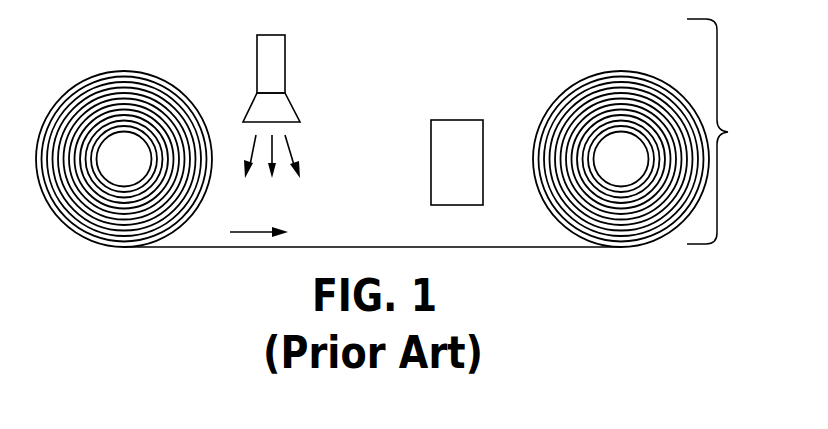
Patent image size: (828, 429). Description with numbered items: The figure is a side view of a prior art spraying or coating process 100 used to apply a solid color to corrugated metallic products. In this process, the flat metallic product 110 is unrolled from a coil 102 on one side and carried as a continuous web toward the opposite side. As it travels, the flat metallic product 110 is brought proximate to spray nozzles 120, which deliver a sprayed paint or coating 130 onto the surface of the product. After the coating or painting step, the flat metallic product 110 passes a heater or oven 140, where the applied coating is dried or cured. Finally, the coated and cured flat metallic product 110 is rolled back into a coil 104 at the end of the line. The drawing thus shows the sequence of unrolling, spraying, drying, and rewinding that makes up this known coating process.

The spraying or coating process 100 is at (732, 131).
The coil 102 is at (128, 75).
The coil 104 is at (625, 72).
The flat metallic product 110 is at (402, 246).
The spray nozzles 120 is at (285, 48).
The sprayed paint or coating 130 is at (292, 147).
The heater or oven 140 is at (435, 120).